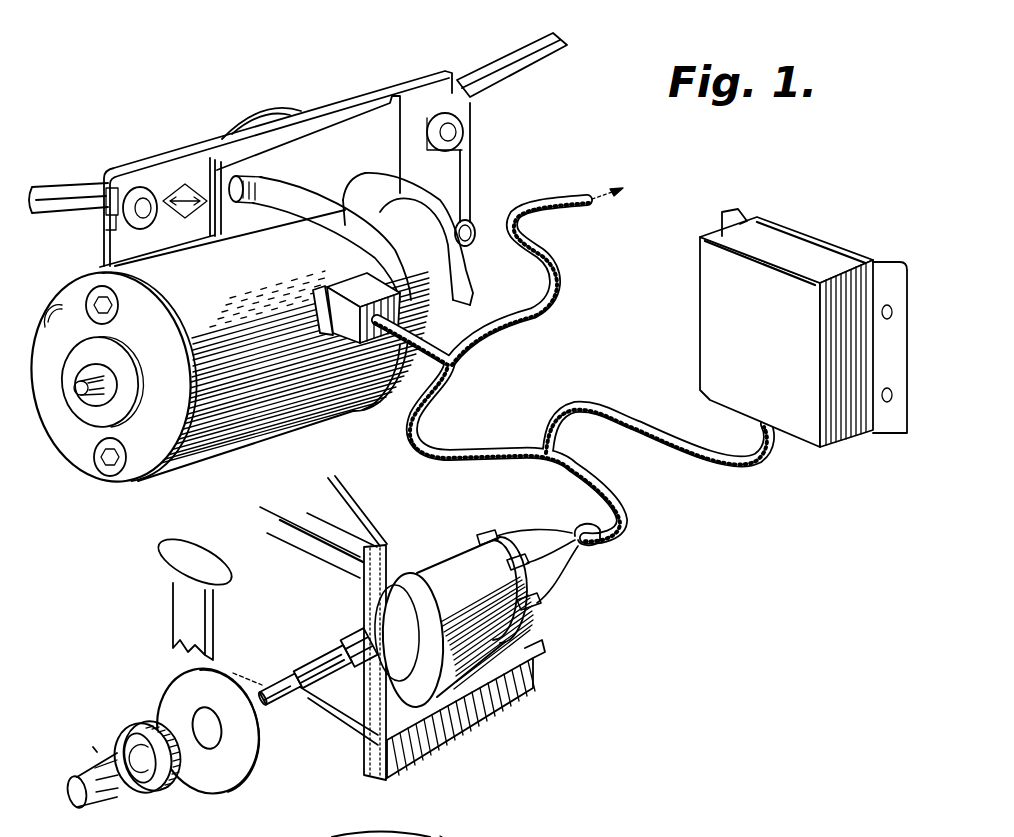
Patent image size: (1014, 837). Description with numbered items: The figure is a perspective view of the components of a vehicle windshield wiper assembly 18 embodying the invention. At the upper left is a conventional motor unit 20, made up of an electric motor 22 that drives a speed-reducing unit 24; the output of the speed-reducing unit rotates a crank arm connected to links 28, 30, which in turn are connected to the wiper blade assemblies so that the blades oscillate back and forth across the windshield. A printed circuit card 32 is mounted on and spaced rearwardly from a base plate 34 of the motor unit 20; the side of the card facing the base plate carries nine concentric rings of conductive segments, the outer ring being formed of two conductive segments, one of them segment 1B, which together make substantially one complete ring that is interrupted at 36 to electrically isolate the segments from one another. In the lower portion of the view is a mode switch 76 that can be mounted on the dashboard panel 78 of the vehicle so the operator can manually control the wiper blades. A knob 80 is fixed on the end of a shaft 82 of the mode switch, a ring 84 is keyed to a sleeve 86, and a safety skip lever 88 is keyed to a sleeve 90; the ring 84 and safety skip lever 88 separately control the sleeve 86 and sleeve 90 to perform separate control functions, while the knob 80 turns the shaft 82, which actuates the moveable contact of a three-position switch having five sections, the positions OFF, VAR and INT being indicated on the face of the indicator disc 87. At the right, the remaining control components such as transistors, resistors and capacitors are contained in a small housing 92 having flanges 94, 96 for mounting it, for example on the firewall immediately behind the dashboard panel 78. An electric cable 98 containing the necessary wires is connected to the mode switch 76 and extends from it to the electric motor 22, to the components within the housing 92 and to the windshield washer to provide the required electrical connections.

The windshield wiper assembly 18 is at (686, 556).
The motor unit 20 is at (112, 491).
The electric motor 22 is at (254, 422).
The speed-reducing unit 24 is at (463, 222).
The link 28 is at (530, 66).
The link 30 is at (57, 190).
The printed circuit card 32 is at (263, 116).
The base plate 34 is at (149, 166).
The interruption 36 is at (400, 836).
The mode switch 76 is at (538, 639).
The dashboard panel 78 is at (360, 720).
The knob 80 is at (97, 803).
The shaft 82 is at (286, 706).
The ring 84 is at (130, 738).
The sleeve 86 is at (318, 660).
The indicator disc 87 is at (168, 690).
The safety skip lever 88 is at (175, 607).
The sleeve 90 is at (345, 640).
The housing 92 is at (713, 332).
The flange 94 is at (731, 212).
The flange 96 is at (897, 268).
The electric cable 98 is at (632, 512).
The conductive segment r1B 1B is at (440, 836).